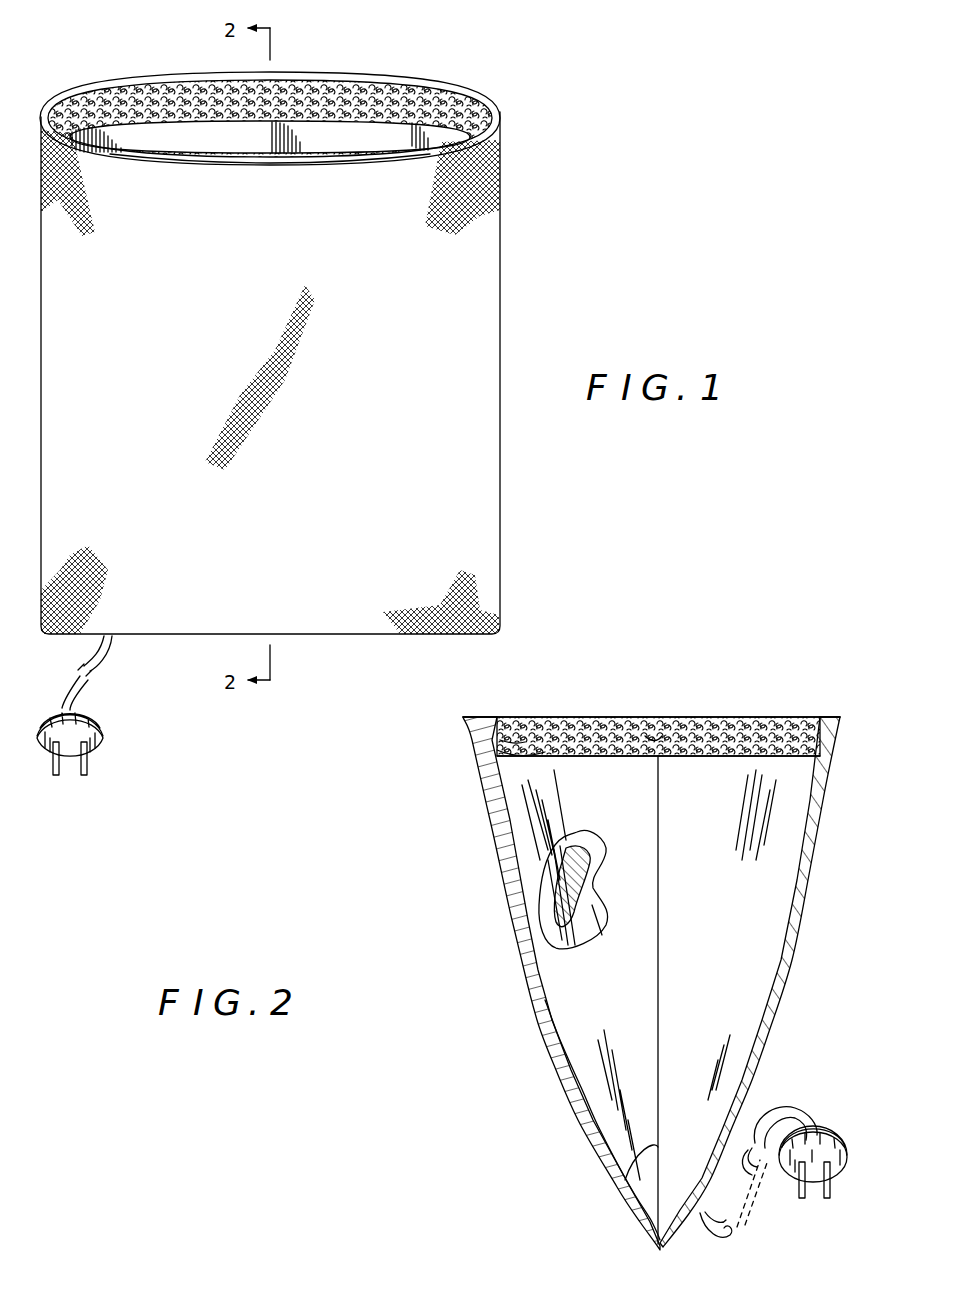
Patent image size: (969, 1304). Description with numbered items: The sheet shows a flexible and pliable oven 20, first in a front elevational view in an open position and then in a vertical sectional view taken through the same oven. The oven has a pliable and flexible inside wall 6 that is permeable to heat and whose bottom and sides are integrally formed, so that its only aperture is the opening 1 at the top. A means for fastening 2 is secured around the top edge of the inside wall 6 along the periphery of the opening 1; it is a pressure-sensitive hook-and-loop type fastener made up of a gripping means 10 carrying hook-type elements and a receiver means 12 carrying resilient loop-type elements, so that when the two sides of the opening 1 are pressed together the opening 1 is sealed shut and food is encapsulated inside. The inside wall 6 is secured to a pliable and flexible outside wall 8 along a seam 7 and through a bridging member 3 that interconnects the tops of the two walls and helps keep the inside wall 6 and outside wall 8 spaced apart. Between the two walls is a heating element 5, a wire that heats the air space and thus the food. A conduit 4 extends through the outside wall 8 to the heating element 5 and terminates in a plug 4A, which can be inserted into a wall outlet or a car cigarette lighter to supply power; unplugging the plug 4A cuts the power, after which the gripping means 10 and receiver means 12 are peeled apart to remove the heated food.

In FIG. 1, the flexible and pliable oven 20 is at (520, 110).
In FIG. 1, the opening 1 is at (298, 132).
In FIG. 2, the opening 1 is at (640, 743).
In FIG. 1, the means for fastening 2 is at (178, 105).
In FIG. 2, the means for fastening 2 is at (507, 752).
In FIG. 1, the bridging member 3 is at (458, 138).
In FIG. 2, the bridging member 3 is at (491, 717).
In FIG. 1, the inside wall 6 is at (360, 138).
In FIG. 2, the inside wall 6 is at (596, 976).
In FIG. 1, the outside wall 8 is at (438, 355).
In FIG. 2, the outside wall 8 is at (806, 988).
In FIG. 1, the conduit 4 is at (85, 680).
In FIG. 2, the conduit 4 is at (798, 1105).
In FIG. 1, the plug 4A is at (100, 742).
In FIG. 2, the plug 4A is at (836, 1128).
In FIG. 2, the gripping means 10 is at (688, 741).
In FIG. 2, the receiver means 12 is at (530, 745).
In FIG. 2, the heating element 5 is at (800, 933).
In FIG. 2, the seam 7 is at (645, 1152).